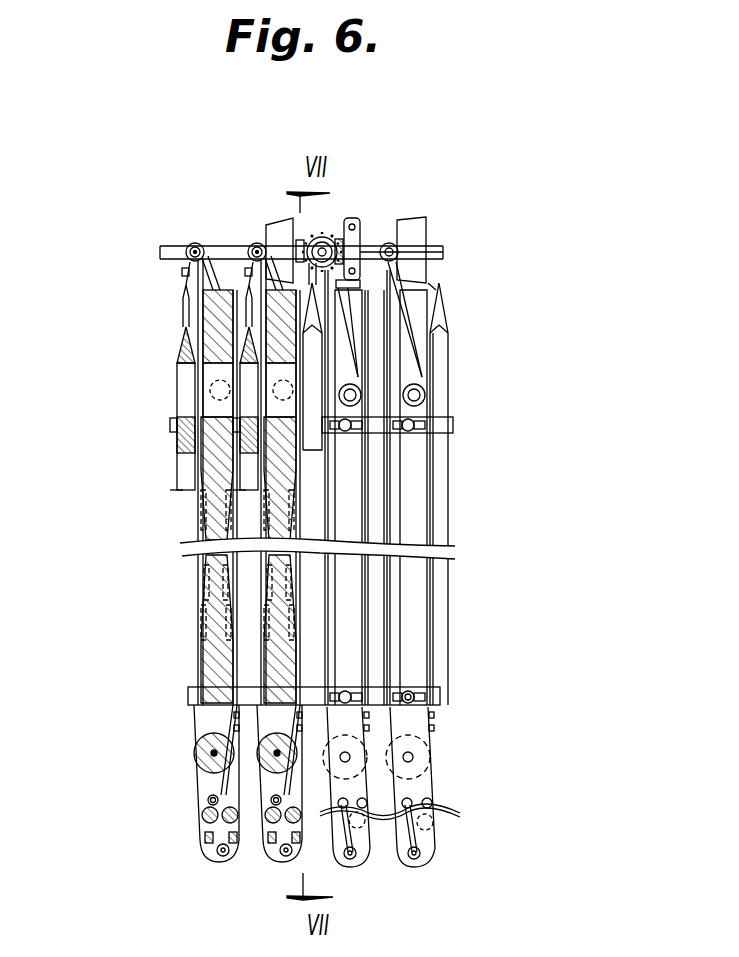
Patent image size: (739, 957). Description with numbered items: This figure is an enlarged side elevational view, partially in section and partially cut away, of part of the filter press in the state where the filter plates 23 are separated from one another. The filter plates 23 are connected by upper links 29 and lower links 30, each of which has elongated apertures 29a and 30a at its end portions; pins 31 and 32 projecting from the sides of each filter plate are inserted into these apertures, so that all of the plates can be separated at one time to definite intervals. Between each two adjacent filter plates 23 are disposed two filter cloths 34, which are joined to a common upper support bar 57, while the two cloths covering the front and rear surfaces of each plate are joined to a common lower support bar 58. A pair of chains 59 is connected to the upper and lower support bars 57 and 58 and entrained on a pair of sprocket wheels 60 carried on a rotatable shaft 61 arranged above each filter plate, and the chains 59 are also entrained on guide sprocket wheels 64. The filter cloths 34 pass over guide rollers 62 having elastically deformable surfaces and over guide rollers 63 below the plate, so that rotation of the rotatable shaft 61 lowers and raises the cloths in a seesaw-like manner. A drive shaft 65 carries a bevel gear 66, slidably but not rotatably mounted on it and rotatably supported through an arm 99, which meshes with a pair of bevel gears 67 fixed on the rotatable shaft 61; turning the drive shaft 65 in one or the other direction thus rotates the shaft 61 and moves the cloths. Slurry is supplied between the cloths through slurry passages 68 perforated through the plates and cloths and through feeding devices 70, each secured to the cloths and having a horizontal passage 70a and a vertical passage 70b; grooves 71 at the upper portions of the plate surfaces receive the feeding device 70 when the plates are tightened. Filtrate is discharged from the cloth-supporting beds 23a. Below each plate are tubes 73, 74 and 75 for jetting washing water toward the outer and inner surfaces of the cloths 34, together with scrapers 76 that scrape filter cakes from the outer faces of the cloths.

The filter plate 23 is at (405, 575).
The cloth-supporting bed 23a is at (270, 590).
The upper link 29 is at (440, 433).
The elongated aperture 29a is at (420, 423).
The lower link 30 is at (440, 705).
The elongated aperture 30a is at (430, 697).
The pin 31 is at (408, 433).
The pin 32 is at (410, 692).
The filter cloth 34 is at (255, 515).
The upper support bar 57 is at (181, 273).
The lower support bar 58 is at (234, 722).
The chain 59 is at (237, 603).
The sprocket wheel 60 is at (194, 244).
The rotatable shaft 61 is at (254, 244).
The guide roller 62 is at (206, 746).
The guide roller 63 is at (205, 816).
The guide sprocket wheel 64 is at (425, 396).
The drive shaft 65 is at (392, 257).
The bevel gear 66 is at (352, 233).
The bevel gear 67 is at (311, 243).
The slurry passage 68 is at (243, 383).
The feeding device 70 is at (236, 352).
The horizontal passage 70a is at (190, 402).
The vertical passage 70b is at (178, 443).
The groove 71 is at (186, 333).
The tube 73 is at (221, 853).
The tube 74 is at (209, 798).
The tube 75 is at (243, 803).
The scraper 76 is at (207, 839).
The arm 99 is at (336, 302).